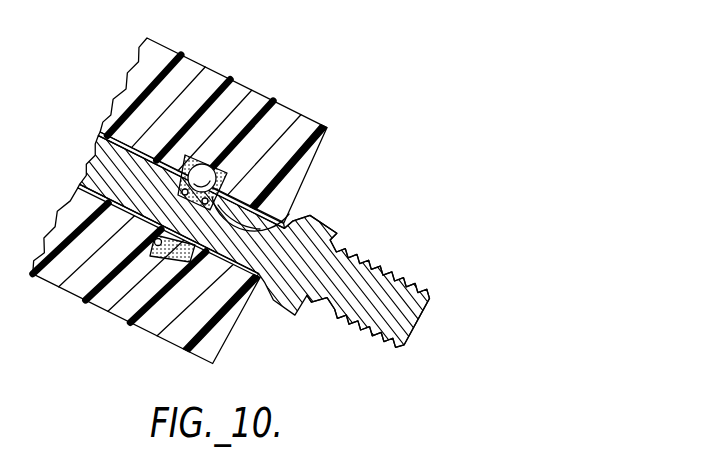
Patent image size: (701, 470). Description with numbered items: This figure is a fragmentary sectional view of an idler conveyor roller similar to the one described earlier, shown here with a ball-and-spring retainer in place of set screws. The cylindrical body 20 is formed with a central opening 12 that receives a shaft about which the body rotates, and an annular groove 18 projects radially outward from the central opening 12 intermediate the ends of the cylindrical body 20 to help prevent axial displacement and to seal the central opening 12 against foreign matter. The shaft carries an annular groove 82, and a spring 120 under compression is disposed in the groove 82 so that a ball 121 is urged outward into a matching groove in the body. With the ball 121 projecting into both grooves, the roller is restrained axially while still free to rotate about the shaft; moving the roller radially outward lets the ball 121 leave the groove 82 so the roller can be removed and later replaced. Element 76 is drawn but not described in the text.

The cylindrical body 20 is at (164, 48).
The central opening 12 is at (76, 188).
The annular groove 18 is at (163, 250).
The spacer strip 76 is at (100, 135).
The annular groove 82 is at (310, 178).
The spring 120 is at (290, 212).
The ball 121 is at (237, 146).